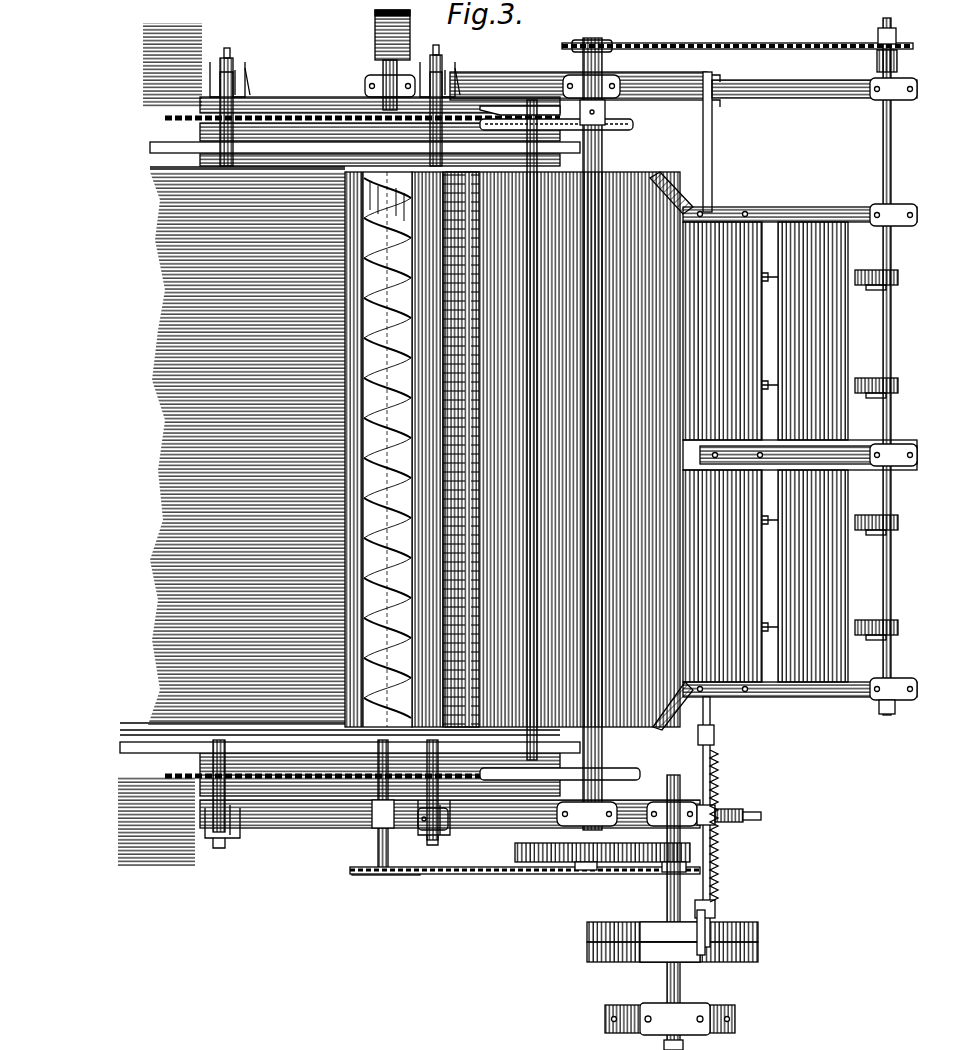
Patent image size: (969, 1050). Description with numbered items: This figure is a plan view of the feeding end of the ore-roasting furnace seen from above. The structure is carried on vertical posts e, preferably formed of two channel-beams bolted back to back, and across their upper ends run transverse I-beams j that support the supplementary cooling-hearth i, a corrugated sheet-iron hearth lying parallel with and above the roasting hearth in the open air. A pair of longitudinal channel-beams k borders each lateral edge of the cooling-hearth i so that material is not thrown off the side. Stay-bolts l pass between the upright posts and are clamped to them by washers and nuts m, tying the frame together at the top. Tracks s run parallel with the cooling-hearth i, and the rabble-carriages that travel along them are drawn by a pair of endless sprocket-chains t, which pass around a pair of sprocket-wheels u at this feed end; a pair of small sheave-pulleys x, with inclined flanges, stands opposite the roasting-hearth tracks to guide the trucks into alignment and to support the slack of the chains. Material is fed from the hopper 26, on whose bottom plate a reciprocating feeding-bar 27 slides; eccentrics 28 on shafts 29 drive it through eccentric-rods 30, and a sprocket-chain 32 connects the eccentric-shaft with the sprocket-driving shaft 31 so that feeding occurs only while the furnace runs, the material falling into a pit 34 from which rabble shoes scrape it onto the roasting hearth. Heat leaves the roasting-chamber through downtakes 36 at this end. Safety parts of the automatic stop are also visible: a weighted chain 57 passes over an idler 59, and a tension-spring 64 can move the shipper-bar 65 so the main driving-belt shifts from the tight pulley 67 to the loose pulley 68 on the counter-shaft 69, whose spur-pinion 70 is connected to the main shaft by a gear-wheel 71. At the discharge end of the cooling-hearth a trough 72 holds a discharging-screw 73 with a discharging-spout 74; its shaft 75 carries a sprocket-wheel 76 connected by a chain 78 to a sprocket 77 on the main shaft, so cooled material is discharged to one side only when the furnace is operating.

The hopper 26 is at (712, 228).
The reciprocating feeding-bar 27 is at (765, 262).
The eccentrics 28 is at (890, 278).
The eccentric-shafts 29 is at (884, 160).
The eccentric-rods 30 is at (770, 385).
The sprocket-driving shaft 31 is at (592, 552).
The sprocket-chain 32 is at (760, 34).
The pit 34 is at (568, 451).
The downtakes 36 is at (175, 62).
The weighted chain 57 is at (762, 818).
The idler 59 is at (745, 815).
The tension-spring 64 is at (720, 788).
The shipper-bar 65 is at (712, 748).
The tight pulley 67 is at (590, 930).
The loose pulley 68 is at (590, 950).
The counter-shaft 69 is at (666, 898).
The spur-pinion 70 is at (692, 852).
The gear-wheel 71 is at (535, 862).
The trough 72 is at (412, 440).
The discharging-screw 73 is at (390, 208).
The discharging-spout 74 is at (380, 30).
The screw shaft 75 is at (378, 850).
The sprocket-wheel 76 is at (370, 876).
The sprocket 77 is at (682, 868).
The chain 78 is at (452, 875).
The vertical posts e is at (236, 72).
The cooling-hearth i is at (162, 278).
The I-beams j is at (380, 80).
The channel-beams k is at (158, 167).
The stay-bolts l is at (228, 66).
The washers and nuts m is at (223, 68).
The tracks s is at (165, 145).
The endless sprocket-chains t is at (265, 118).
The sprocket-wheels u is at (610, 128).
The small sheave-pulleys x is at (512, 110).